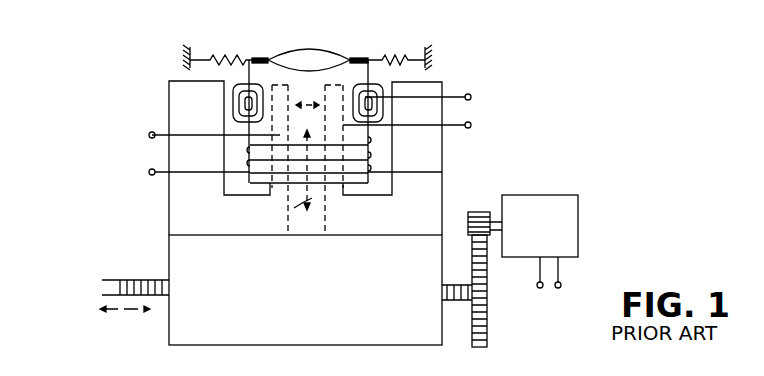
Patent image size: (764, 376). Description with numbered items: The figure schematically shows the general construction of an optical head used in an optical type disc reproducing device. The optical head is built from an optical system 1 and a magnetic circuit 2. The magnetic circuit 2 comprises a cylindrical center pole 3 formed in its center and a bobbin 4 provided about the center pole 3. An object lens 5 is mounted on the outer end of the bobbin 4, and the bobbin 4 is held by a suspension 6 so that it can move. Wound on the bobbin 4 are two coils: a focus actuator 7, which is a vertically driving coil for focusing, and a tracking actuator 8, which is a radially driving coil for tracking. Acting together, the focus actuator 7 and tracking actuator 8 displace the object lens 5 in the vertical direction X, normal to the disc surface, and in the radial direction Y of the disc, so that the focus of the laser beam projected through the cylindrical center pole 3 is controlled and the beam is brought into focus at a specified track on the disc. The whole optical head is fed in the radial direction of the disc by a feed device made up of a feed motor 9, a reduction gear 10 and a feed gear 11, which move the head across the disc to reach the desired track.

The optical system 1 is at (310, 305).
The magnetic circuit 2 is at (394, 225).
The cylindrical center pole 3 is at (267, 133).
The bobbin 4 is at (372, 178).
The object lens 5 is at (325, 51).
The suspension 6 is at (216, 55).
The focus actuator 7 is at (162, 176).
The tracking actuator 8 is at (242, 60).
The feed motor 9 is at (530, 195).
The reduction gear 10 is at (487, 323).
The feed gear 11 is at (158, 297).